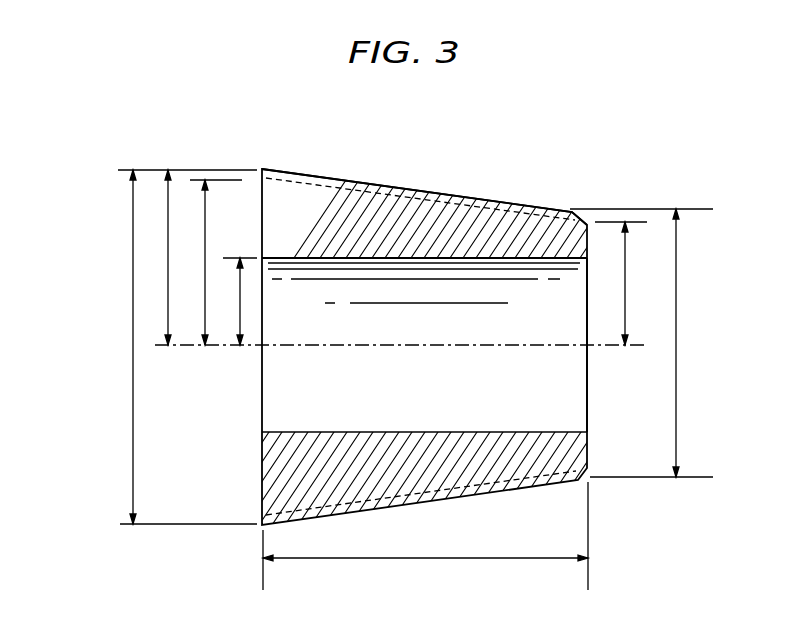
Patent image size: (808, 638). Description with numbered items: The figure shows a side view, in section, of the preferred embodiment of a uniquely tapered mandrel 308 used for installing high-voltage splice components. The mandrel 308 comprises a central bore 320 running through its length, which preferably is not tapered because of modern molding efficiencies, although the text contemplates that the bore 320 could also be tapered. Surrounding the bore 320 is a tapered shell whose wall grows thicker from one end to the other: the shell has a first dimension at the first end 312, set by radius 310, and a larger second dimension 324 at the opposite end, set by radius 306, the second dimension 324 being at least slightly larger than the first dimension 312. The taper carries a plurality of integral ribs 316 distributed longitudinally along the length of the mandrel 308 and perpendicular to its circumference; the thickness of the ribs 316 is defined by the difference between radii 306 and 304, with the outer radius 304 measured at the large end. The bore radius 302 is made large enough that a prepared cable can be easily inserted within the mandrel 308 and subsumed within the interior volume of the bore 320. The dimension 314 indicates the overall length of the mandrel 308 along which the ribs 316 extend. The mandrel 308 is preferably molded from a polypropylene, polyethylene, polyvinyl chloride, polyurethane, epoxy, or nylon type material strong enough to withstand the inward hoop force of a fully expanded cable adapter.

The radius 302 is at (240, 313).
The radius 304 is at (203, 250).
The radius 306 is at (168, 283).
The uniquely tapered mandrel 308 is at (400, 150).
The radius 310 is at (625, 268).
The first end 312 is at (676, 283).
The sleeve length dimension 314 is at (430, 560).
The integral ribs 316 is at (502, 202).
The bore 320 is at (570, 398).
The second dimension 324 is at (133, 350).